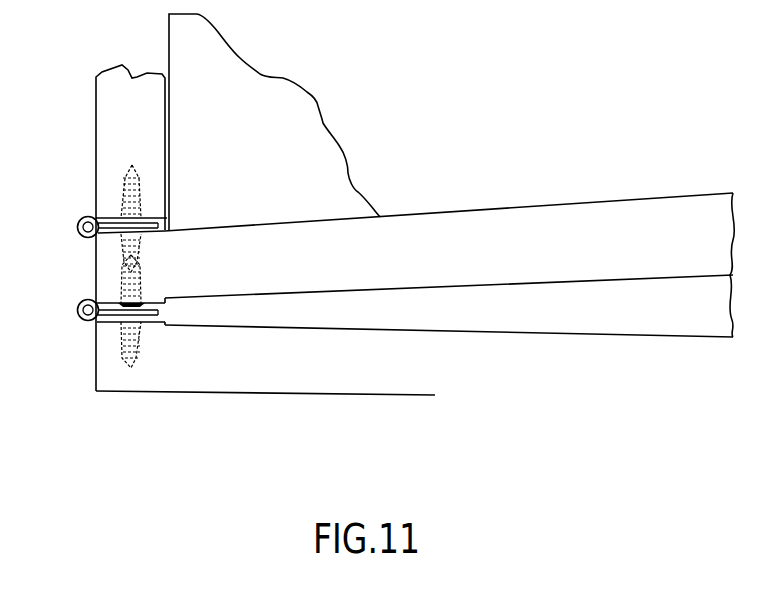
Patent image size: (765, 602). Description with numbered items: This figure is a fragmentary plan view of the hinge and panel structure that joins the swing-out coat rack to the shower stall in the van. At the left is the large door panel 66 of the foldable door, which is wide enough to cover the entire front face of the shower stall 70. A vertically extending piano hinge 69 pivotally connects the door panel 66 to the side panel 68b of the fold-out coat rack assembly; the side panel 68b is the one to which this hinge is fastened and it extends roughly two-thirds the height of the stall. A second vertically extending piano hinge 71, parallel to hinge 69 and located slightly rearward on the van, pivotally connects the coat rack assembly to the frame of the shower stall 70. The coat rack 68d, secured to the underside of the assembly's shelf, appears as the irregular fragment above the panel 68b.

The door panel 66 is at (142, 88).
The side panel 68b is at (472, 218).
The coat rack 68d is at (272, 97).
The piano hinge 69 is at (78, 223).
The shower stall 70 is at (313, 375).
The piano hinge 71 is at (78, 312).